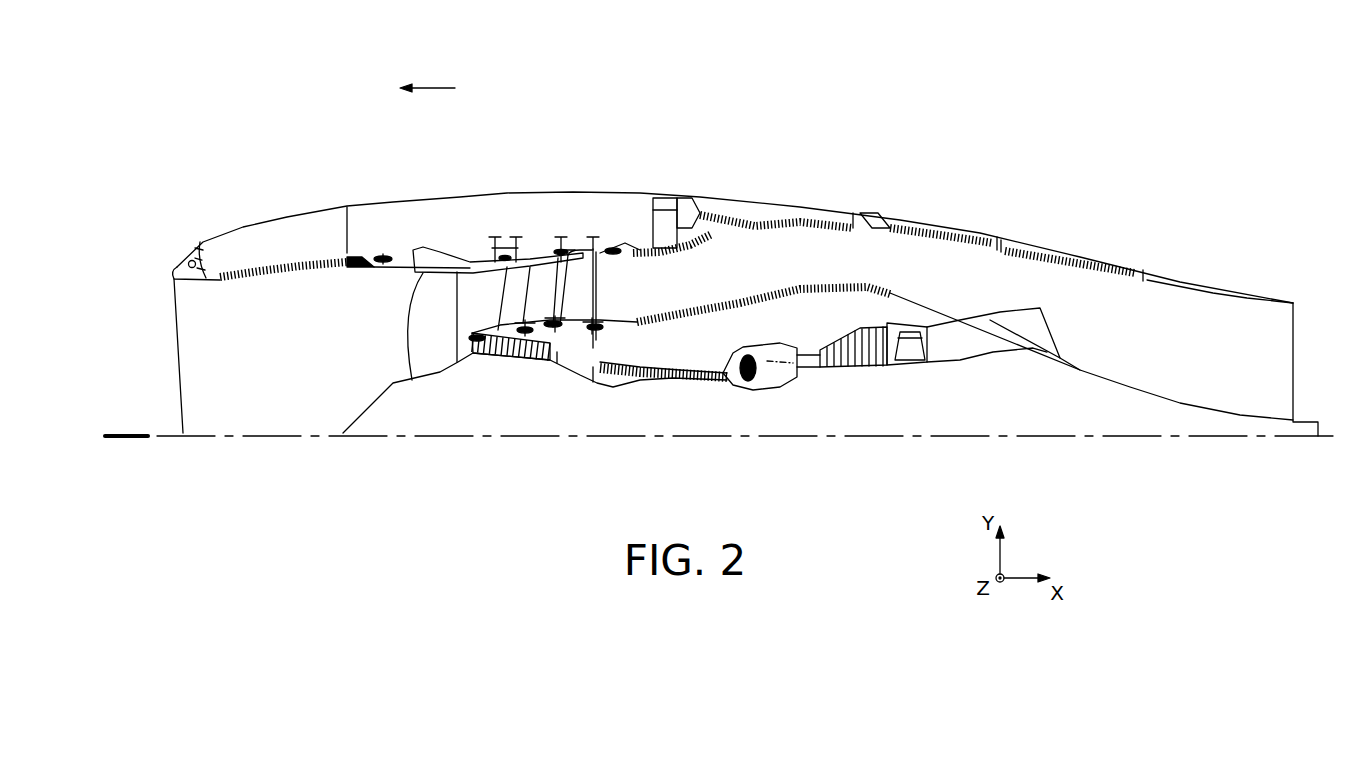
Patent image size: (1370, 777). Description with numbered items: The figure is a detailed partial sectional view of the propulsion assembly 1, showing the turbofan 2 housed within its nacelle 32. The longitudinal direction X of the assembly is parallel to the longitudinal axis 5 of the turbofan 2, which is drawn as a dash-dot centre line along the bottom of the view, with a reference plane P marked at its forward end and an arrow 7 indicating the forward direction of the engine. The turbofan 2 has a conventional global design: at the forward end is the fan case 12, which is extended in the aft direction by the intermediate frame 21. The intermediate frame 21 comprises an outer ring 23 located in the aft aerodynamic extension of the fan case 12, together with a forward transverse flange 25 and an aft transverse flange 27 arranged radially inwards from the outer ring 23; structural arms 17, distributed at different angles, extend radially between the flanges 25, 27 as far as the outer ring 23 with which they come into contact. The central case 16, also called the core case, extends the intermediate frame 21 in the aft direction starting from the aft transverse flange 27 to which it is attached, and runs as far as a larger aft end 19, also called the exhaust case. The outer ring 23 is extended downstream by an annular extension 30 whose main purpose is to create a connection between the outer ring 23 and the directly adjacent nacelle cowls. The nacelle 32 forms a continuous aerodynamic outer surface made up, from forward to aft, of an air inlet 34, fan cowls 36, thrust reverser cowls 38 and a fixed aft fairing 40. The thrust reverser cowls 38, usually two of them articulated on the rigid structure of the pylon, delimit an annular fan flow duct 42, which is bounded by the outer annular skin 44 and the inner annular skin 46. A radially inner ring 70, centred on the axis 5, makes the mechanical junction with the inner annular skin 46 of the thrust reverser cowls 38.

The propulsion assembly 1 is at (592, 85).
The turbofan 2 is at (370, 378).
The longitudinal axis 5 is at (169, 437).
The flight direction 7 is at (430, 88).
The fan case 12 is at (487, 258).
The central case 16 is at (683, 373).
The structural arms 17 is at (572, 287).
The aft end 19 is at (863, 330).
The intermediate frame 21 is at (617, 293).
The outer ring 23 is at (583, 250).
The transverse flange 25 is at (552, 340).
The aft transverse flange 27 is at (598, 335).
The annular extension 30 is at (612, 242).
The nacelle 32 is at (304, 208).
The air inlet 34 is at (243, 228).
The fan cowls 36 is at (383, 215).
The thrust reverser cowls 38 is at (893, 216).
The fixed aft fairing 40 is at (1183, 286).
The annular fan flow duct 42 is at (853, 267).
The outer annular skin 44 is at (678, 250).
The inner annular skin 46 is at (765, 289).
The radially inner ring 70 is at (618, 312).
The reference plane P is at (122, 437).